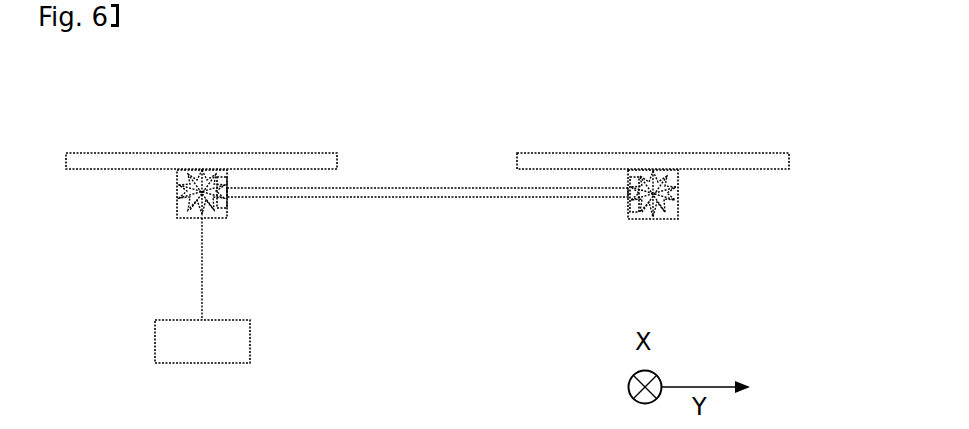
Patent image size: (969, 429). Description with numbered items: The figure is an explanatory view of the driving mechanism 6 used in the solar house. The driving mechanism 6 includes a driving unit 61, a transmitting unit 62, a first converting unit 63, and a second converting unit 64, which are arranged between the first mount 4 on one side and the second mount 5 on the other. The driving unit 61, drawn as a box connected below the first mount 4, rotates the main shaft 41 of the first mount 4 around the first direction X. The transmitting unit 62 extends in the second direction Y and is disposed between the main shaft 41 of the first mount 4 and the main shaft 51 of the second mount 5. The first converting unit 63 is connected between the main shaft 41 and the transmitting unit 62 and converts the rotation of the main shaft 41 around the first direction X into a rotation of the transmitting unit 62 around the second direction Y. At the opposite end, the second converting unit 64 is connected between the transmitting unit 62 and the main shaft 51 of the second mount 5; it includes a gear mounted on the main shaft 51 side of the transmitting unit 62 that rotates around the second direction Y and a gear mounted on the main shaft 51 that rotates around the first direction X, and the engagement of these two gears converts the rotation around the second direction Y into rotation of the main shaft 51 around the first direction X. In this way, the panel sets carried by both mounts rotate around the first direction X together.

The first mount 4 is at (308, 154).
The second mount 5 is at (758, 154).
The driving mechanism 6 is at (428, 161).
The main shaft 41 is at (180, 212).
The main shaft 51 is at (680, 202).
The driving unit 61 is at (250, 340).
The transmitting unit 62 is at (445, 197).
The first converting unit 63 is at (227, 207).
The second converting unit 64 is at (638, 215).